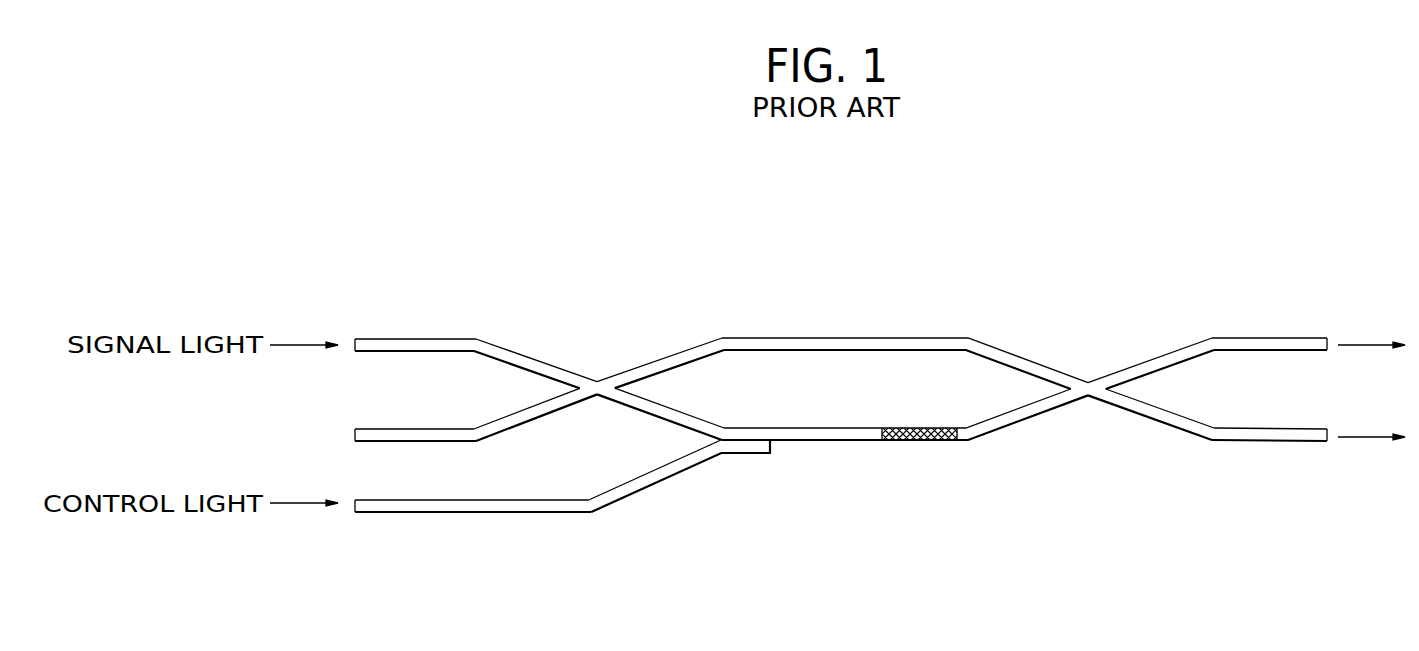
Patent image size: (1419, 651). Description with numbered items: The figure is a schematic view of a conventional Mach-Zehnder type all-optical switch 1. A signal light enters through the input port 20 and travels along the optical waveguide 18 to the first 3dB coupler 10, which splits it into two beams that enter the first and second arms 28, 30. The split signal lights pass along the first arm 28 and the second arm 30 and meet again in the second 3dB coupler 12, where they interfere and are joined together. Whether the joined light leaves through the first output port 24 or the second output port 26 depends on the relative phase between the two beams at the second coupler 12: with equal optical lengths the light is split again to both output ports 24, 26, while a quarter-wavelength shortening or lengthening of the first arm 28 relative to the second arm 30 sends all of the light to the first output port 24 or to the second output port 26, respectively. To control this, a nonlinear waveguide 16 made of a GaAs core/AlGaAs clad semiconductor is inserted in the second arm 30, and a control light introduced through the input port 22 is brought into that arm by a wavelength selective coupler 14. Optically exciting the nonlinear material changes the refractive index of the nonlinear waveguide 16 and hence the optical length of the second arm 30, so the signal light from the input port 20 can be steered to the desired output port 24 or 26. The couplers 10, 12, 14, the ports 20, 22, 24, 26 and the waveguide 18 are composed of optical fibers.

The Mach-Zehnder type all-optical switch 1 is at (697, 212).
The first 3dB coupler 10 is at (598, 379).
The second 3dB coupler 12 is at (1086, 378).
The wavelength selective coupler 14 is at (757, 455).
The nonlinear waveguide 16 is at (935, 426).
The optical waveguide 18 is at (497, 344).
The input port 20 is at (353, 338).
The input port 22 is at (352, 515).
The first output port 24 is at (1332, 352).
The second output port 26 is at (1330, 445).
The first arm 28 is at (897, 337).
The second arm 30 is at (842, 426).